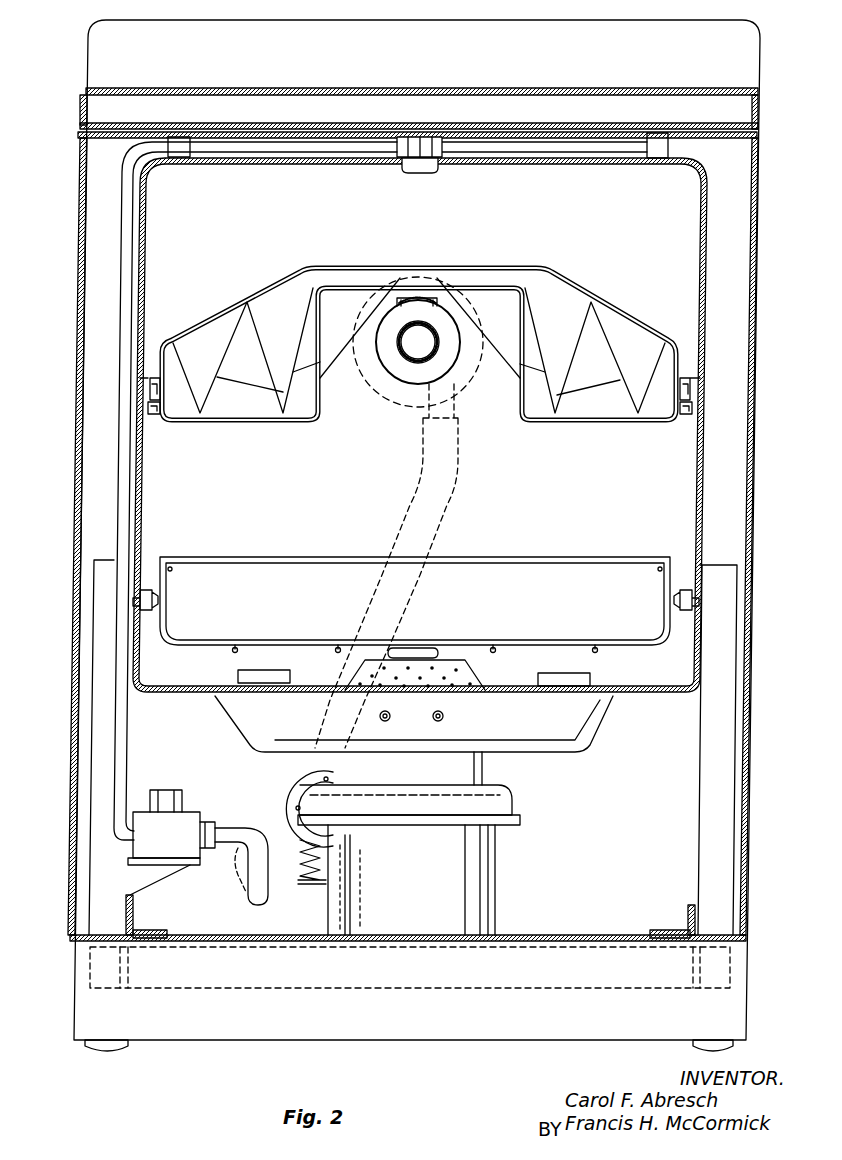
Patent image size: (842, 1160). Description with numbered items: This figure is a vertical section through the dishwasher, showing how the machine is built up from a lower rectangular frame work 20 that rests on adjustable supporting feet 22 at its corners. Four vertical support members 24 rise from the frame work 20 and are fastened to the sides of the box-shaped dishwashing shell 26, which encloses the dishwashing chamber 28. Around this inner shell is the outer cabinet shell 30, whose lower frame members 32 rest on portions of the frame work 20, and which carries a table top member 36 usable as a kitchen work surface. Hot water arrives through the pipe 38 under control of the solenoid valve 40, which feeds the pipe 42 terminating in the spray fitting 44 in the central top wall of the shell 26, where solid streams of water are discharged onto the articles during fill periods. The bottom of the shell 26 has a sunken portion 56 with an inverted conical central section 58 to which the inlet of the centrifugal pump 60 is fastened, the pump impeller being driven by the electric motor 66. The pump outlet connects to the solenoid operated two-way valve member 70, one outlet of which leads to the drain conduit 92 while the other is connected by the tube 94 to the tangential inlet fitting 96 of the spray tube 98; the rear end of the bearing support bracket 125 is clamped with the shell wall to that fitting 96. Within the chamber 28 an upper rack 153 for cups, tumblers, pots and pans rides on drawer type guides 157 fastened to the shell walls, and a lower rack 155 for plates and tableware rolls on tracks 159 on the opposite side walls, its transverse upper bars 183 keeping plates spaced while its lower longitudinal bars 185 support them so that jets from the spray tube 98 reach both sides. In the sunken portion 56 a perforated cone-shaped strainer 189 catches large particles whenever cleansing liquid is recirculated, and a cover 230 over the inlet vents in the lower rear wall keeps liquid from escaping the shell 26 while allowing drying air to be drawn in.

The lower rectangular frame work 20 is at (735, 968).
The adjustable supporting feet 22 is at (85, 1047).
The vertical support members 24 is at (130, 740).
The dishwashing shell 26 is at (700, 215).
The dishwashing chamber 28 is at (336, 473).
The outer cabinet shell 30 is at (762, 341).
The frame members 32 is at (670, 930).
The table top member 36 is at (756, 46).
The pipe 38 is at (262, 910).
The solenoid valve 40 is at (190, 812).
The pipe 42 is at (118, 296).
The spray fitting 44 is at (405, 170).
The sunken portion 56 is at (588, 742).
The inverted conical shaped central section 58 is at (482, 762).
The centrifugal pump 60 is at (505, 806).
The electric motor 66 is at (396, 880).
The two-way valve member 70 is at (300, 775).
The drain conduit 92 is at (265, 870).
The tube 94 is at (457, 465).
The tangential inlet fitting 96 is at (462, 390).
The spray tube 98 is at (400, 365).
The bearing support bracket 125 is at (432, 298).
The upper rack 153 is at (420, 346).
The lower rack 155 is at (416, 587).
The drawer type guides 157 is at (153, 414).
The tracks 159 is at (147, 590).
The transverse upper bars 183 is at (450, 557).
The lower longitudinal bars 185 is at (598, 650).
The strainer 189 is at (507, 631).
The cover 230 is at (245, 672).